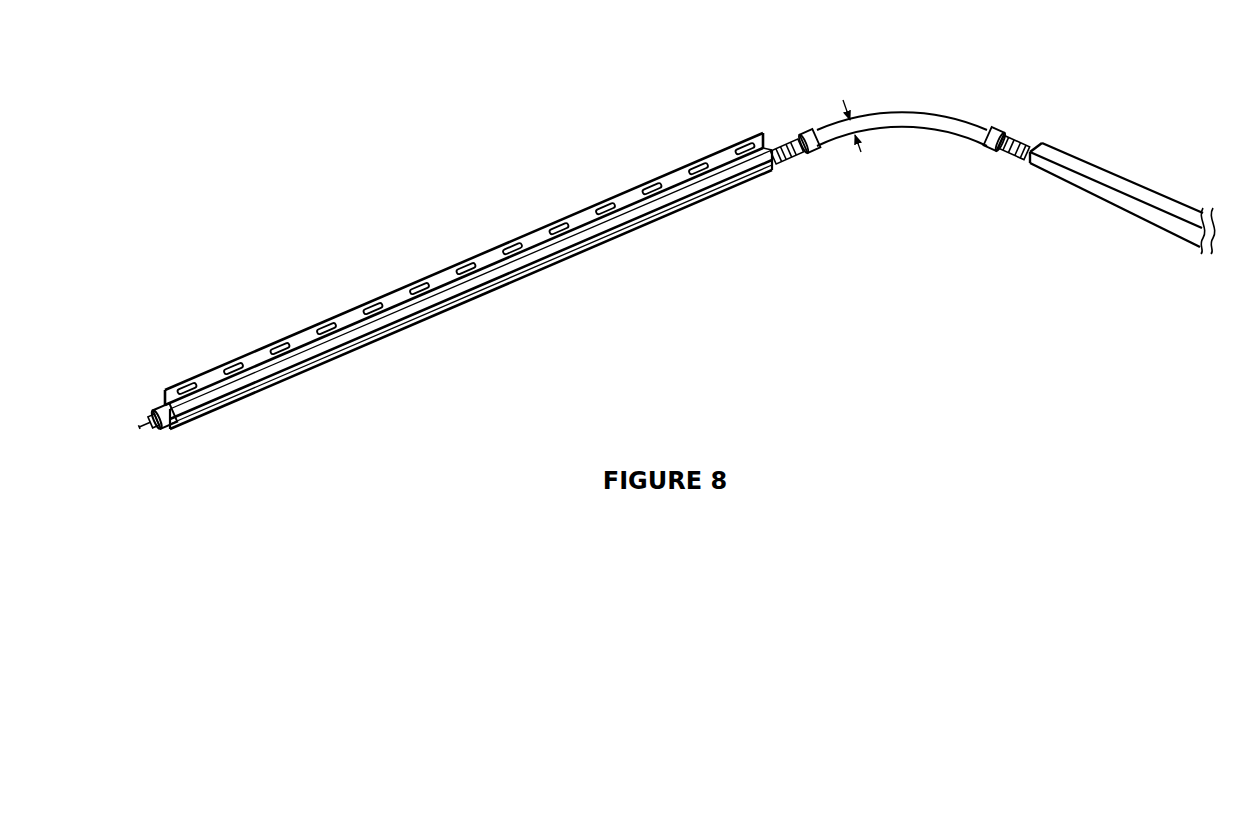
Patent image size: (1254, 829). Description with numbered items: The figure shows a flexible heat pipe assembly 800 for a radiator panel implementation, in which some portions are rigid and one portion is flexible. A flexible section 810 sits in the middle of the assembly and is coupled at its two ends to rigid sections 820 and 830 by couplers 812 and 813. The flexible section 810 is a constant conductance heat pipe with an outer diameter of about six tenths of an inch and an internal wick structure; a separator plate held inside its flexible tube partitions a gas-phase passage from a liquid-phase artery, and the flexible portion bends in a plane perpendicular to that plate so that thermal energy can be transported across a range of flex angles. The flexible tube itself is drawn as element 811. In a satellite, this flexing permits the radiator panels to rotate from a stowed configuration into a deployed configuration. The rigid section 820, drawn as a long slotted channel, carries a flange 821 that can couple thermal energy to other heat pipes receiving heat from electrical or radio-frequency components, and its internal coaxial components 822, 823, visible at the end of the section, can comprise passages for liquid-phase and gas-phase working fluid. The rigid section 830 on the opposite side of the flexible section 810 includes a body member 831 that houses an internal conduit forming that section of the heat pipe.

The flexible heat pipe assembly 800 is at (314, 119).
The flexible section 810 is at (783, 105).
The flexible tube 811 is at (891, 136).
The coupler 812 is at (800, 162).
The coupler 813 is at (1007, 163).
The rigid section 820 is at (752, 105).
The flange 821 is at (462, 309).
The internal coaxial component 822 is at (160, 406).
The internal coaxial component 823 is at (140, 420).
The rigid section 830 is at (1052, 128).
The handle bar 831 is at (1101, 203).